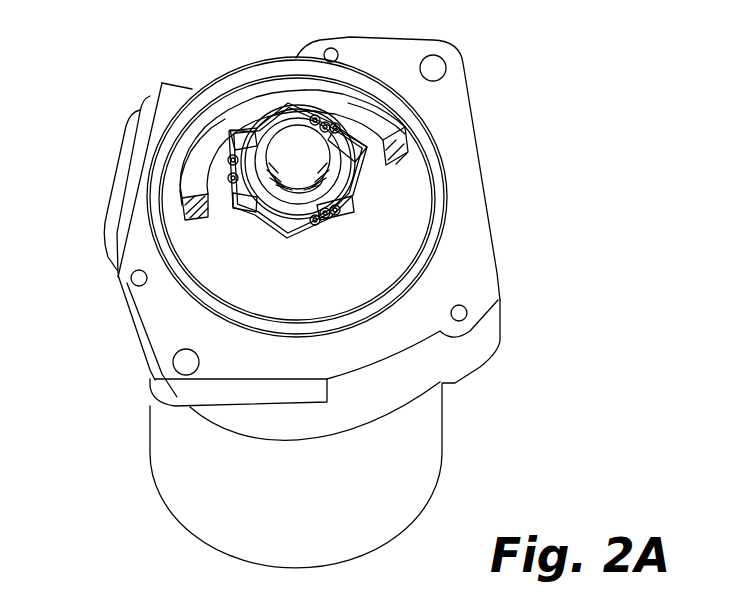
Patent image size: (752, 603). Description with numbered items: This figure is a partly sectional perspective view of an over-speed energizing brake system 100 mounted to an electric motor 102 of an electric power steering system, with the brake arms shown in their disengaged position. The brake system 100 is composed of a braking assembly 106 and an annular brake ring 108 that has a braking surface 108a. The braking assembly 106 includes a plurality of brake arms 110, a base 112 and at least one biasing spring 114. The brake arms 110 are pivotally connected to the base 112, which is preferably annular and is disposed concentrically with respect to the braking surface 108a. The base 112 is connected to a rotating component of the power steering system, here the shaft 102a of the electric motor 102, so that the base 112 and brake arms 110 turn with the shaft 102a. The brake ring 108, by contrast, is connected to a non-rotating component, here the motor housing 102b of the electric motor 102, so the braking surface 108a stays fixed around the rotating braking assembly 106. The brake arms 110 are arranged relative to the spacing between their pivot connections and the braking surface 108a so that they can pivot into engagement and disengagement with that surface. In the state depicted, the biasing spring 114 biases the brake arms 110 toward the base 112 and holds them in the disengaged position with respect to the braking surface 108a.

The over-speed energizing brake system 100 is at (427, 193).
The electric motor 102 is at (443, 410).
The shaft 102a is at (320, 117).
The motor housing 102b is at (468, 267).
The braking assembly 106 is at (211, 219).
The annular brake ring 108 is at (197, 173).
The braking surface 108a is at (368, 120).
The brake arms 110 is at (234, 156).
The base 112 is at (262, 228).
The biasing spring 114 is at (231, 155).